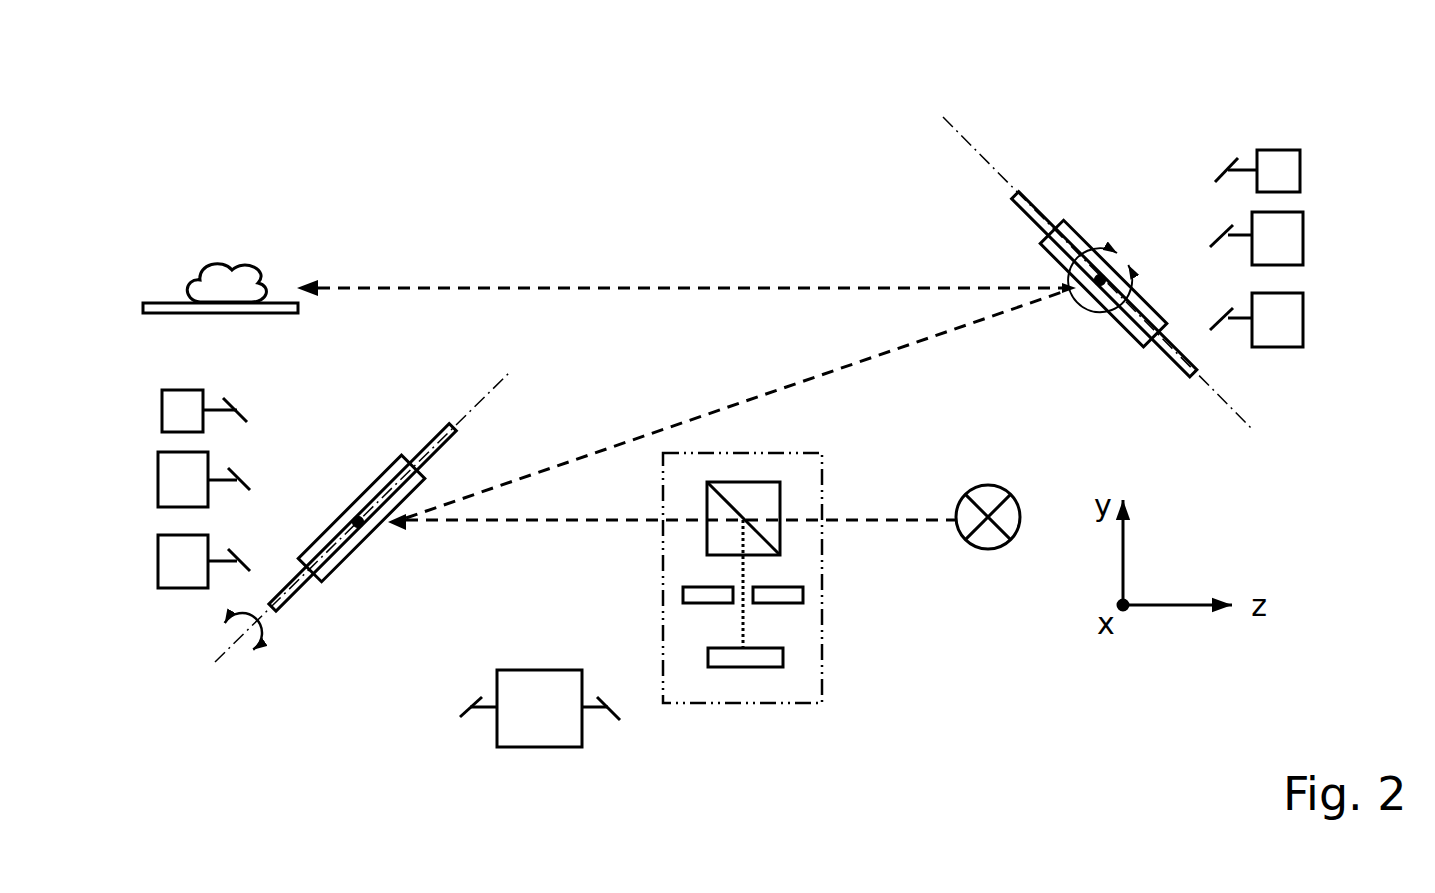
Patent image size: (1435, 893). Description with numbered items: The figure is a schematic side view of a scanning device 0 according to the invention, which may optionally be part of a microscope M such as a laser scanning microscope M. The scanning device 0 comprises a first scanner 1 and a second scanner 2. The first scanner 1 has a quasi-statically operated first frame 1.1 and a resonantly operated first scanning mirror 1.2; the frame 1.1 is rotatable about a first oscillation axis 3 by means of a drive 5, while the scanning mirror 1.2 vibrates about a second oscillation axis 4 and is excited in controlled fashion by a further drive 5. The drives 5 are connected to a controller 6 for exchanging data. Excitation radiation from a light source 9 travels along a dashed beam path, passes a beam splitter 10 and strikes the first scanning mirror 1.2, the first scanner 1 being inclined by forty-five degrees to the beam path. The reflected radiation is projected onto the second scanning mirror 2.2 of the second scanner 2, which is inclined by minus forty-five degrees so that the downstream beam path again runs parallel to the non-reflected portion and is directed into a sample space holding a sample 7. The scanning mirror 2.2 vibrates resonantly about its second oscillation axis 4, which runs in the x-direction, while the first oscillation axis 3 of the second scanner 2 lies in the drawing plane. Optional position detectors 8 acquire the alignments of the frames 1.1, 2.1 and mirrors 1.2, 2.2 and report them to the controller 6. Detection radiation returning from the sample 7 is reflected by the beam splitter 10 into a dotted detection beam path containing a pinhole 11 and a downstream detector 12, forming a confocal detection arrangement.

The first scanner 1 is at (402, 560).
The first frame 1.1 is at (298, 590).
The first scanning mirror 1.2 is at (347, 560).
The second scanner 2 is at (1075, 306).
The frame of second scanner 2.1 is at (1173, 357).
The second scanning mirror 2.2 is at (1123, 327).
The first oscillation axis 3 is at (356, 516).
The second oscillation axis 4 is at (230, 645).
The drive 5 is at (158, 483).
The controller 6 is at (540, 708).
The sample 7 is at (210, 268).
The position detector 8 is at (162, 407).
The light source 9 is at (992, 485).
The beam splitter 10 is at (780, 530).
The pinhole 11 is at (803, 595).
The detector 12 is at (783, 658).
The microscope M is at (545, 173).
The scanning device 0 is at (640, 202).